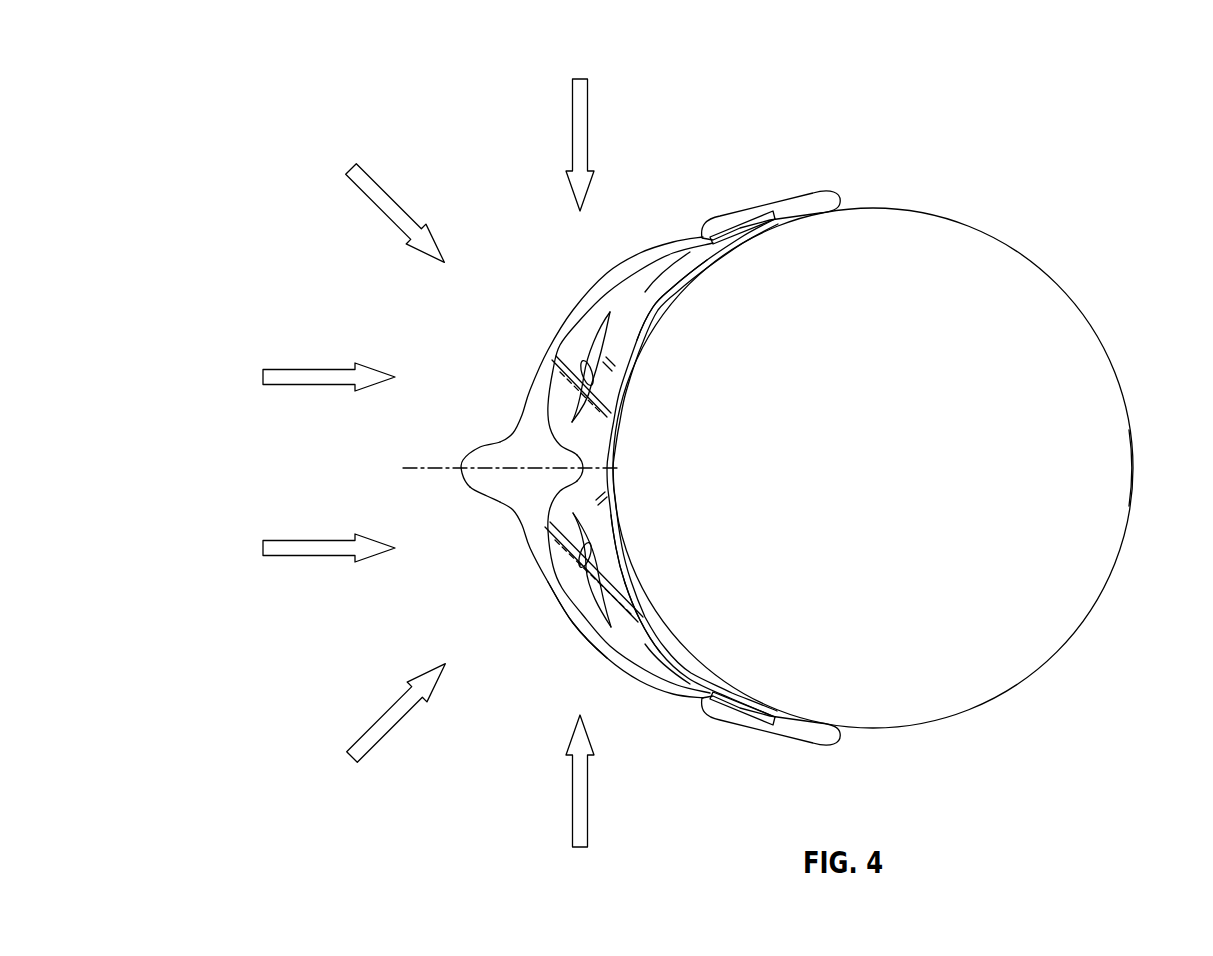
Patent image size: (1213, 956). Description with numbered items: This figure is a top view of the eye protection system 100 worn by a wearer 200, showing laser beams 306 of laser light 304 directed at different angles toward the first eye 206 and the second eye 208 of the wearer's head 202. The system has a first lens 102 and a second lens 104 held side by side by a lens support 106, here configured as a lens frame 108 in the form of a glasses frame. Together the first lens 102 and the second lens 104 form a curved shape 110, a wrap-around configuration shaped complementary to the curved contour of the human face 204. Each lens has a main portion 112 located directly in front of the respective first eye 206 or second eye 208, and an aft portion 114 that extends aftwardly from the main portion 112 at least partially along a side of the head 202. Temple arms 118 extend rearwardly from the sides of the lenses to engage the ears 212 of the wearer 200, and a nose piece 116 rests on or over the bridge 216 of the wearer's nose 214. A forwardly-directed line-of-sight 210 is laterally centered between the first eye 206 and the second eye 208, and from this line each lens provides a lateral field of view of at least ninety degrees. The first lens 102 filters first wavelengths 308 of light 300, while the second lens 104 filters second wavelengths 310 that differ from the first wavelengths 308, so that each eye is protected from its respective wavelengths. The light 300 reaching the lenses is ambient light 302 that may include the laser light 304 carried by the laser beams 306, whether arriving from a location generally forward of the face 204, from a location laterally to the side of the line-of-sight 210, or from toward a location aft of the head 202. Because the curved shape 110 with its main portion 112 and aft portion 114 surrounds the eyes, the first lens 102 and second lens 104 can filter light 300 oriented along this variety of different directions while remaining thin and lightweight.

The eye protection system 100 is at (670, 288).
The first lens 102 is at (553, 520).
The second lens 104 is at (553, 407).
The lens support 106 is at (642, 322).
The lens frame 108 is at (636, 606).
The curved shape 110 is at (622, 540).
The main portion 112 is at (620, 368).
The aft portion 114 is at (680, 276).
The nose piece 116 is at (577, 453).
The temple arms 118 is at (748, 232).
The wearer 200 is at (1060, 284).
The head 202 is at (1110, 352).
The human face 204 is at (583, 647).
The first eye 206 is at (580, 583).
The second eye 208 is at (583, 368).
The forwardly-directed line-of-sight 210 is at (420, 465).
The ears 212 is at (778, 197).
The nose 214 is at (483, 492).
The bridge 216 is at (555, 452).
The light 300 is at (188, 474).
The ambient light 302 is at (301, 284).
The laser light 304 is at (589, 97).
The laser beams 306 is at (573, 105).
The first wavelengths 308 is at (590, 138).
The second wavelengths 310 is at (400, 207).